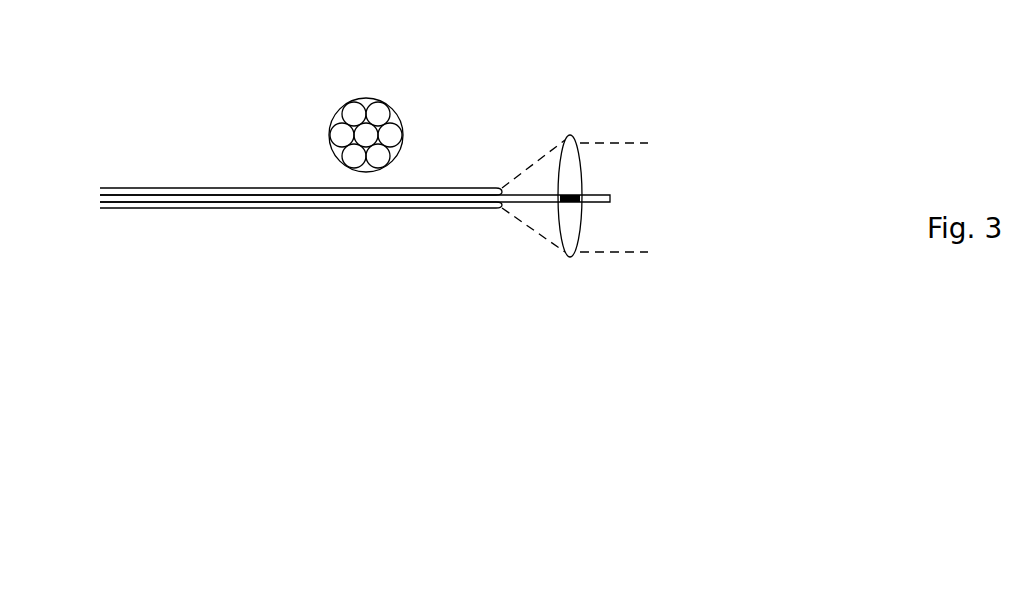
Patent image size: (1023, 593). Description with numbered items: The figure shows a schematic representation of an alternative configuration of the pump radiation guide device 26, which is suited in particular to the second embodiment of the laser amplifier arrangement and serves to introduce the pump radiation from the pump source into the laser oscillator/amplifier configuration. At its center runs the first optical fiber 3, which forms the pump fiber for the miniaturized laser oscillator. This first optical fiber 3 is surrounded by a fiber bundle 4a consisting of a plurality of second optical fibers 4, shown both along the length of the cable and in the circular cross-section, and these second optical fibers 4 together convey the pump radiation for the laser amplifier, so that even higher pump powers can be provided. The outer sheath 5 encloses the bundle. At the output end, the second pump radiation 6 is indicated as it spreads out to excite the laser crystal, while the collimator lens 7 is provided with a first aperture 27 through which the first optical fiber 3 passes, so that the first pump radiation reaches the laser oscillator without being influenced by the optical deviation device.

The first optical fiber 3 is at (366, 133).
The second optical fibers 4 is at (355, 157).
The fiber bundle 4a is at (402, 122).
The sheath 5 is at (349, 98).
The second pump radiation 6 is at (623, 141).
The collimator lens 7 is at (568, 258).
The pump radiation guide device 26 is at (259, 299).
The first aperture 27 is at (578, 204).